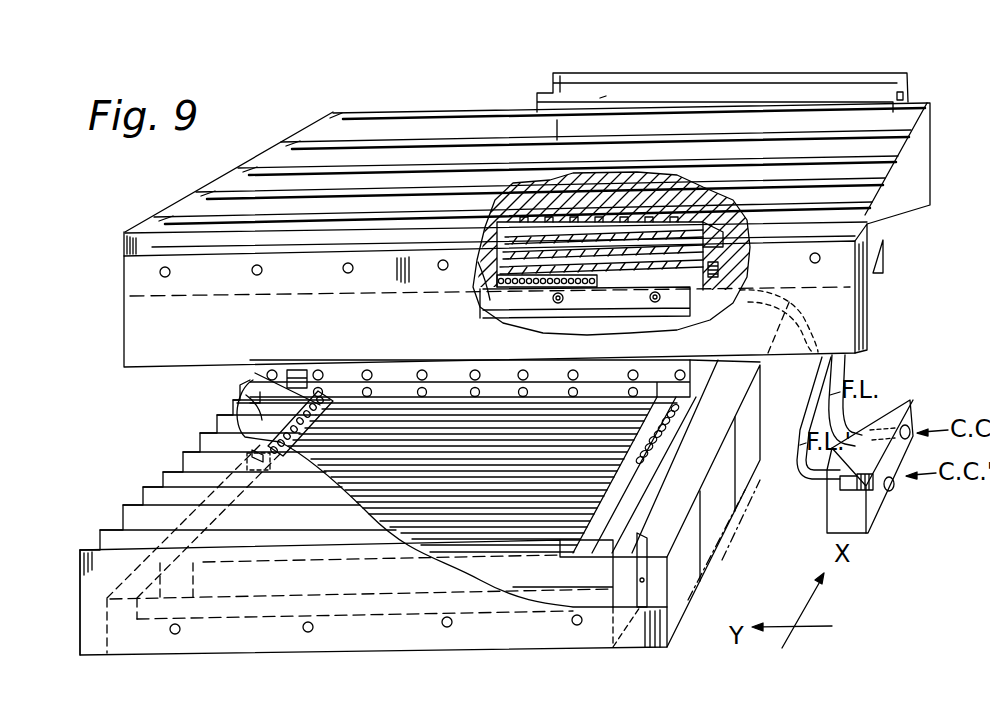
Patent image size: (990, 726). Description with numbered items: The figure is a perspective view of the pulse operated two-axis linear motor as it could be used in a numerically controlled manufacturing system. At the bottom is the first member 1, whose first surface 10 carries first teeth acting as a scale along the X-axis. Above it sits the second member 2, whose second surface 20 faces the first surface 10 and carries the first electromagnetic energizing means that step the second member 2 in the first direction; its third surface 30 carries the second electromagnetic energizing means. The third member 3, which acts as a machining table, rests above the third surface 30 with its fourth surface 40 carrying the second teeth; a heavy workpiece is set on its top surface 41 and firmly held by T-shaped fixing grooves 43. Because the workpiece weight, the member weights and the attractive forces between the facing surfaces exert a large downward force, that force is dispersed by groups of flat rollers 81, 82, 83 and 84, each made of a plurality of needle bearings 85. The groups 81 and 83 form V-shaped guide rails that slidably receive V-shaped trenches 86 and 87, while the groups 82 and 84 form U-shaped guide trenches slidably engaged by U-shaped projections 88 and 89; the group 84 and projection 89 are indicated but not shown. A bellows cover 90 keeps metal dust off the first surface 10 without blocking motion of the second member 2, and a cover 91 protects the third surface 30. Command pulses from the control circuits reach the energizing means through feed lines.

The first member 1 is at (438, 522).
The second member 2 is at (694, 369).
The third member 3 is at (532, 220).
The first surface 10 is at (680, 500).
The second surface 20 is at (252, 379).
The third surface 30 is at (606, 196).
The fourth surface 40 is at (712, 235).
The top surface 41 is at (449, 155).
The T-shaped fixing grooves 43 is at (311, 146).
The group of flat rollers 81 is at (262, 428).
The group of flat rollers 82 is at (565, 480).
The group of flat rollers 83 is at (656, 262).
The group of flat rollers 84 is at (924, 110).
The needle bearings 85 is at (158, 461).
The V-shaped trench 86 is at (238, 392).
The V-shaped trench 87 is at (483, 262).
The U-shaped projection 88 is at (690, 404).
The U-shaped projection 89 is at (900, 97).
The cover 90 is at (598, 102).
The cover 91 is at (160, 336).